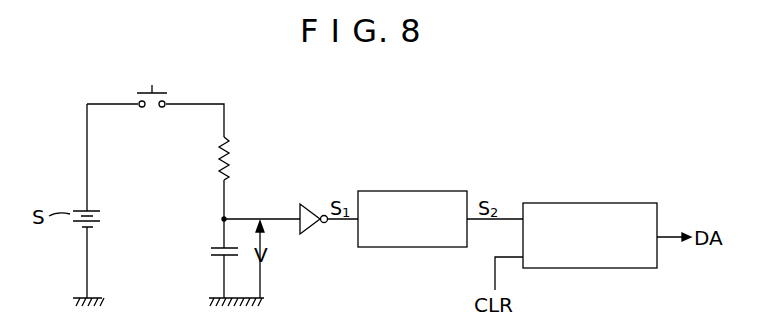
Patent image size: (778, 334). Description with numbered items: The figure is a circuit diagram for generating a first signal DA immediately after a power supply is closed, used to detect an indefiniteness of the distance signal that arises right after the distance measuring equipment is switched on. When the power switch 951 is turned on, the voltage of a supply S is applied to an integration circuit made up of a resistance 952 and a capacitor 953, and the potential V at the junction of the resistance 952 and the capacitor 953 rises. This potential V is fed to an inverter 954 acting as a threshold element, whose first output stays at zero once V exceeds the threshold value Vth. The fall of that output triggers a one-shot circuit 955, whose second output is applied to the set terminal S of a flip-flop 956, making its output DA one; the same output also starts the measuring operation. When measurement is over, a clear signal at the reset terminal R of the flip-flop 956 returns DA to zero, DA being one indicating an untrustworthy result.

The power switch 951 is at (165, 88).
The resistance 952 is at (218, 152).
The capacitor 953 is at (211, 250).
The inverter 954 is at (305, 204).
The one-shot circuit 955 is at (415, 191).
The flip-flop 956 is at (594, 203).